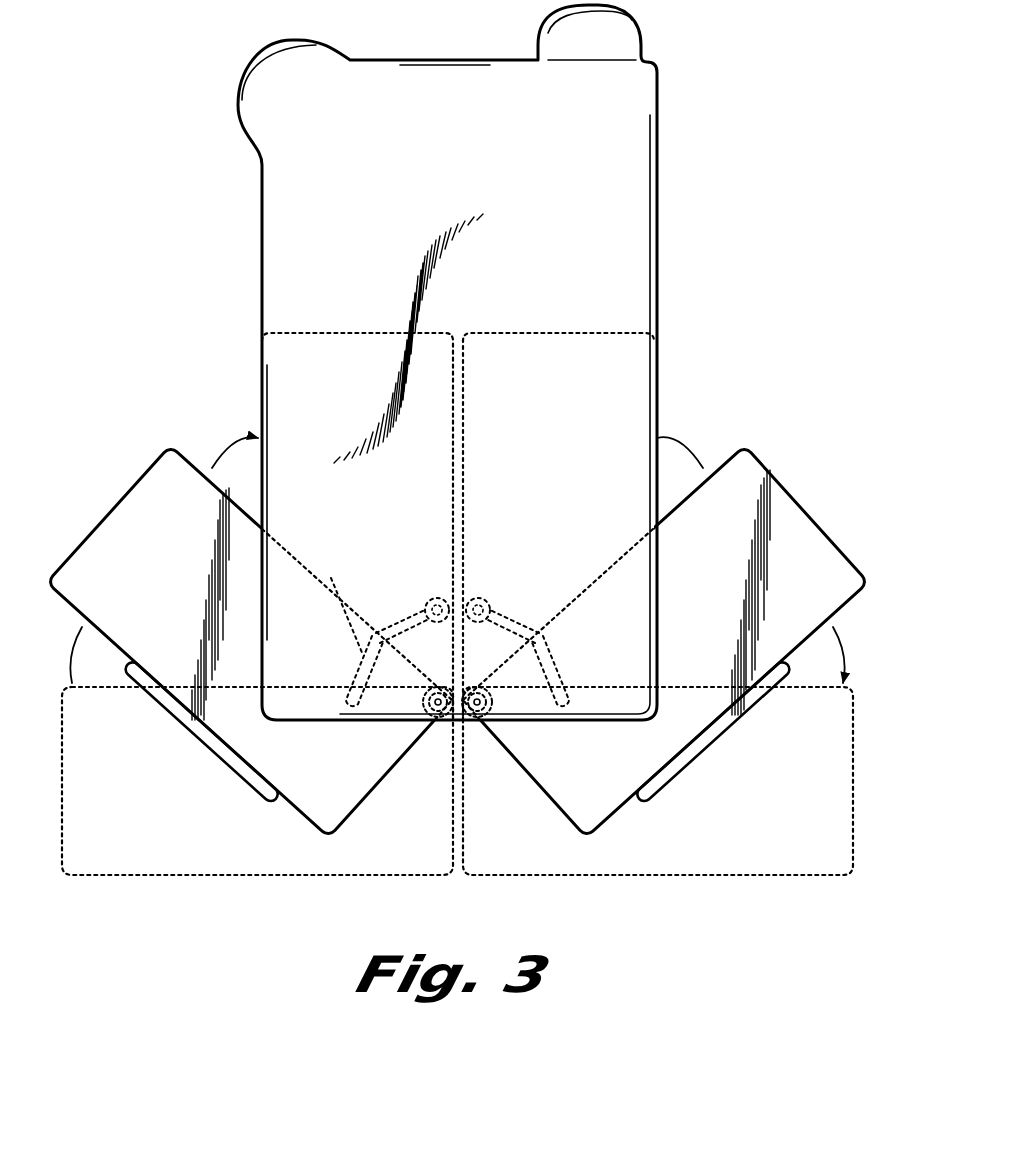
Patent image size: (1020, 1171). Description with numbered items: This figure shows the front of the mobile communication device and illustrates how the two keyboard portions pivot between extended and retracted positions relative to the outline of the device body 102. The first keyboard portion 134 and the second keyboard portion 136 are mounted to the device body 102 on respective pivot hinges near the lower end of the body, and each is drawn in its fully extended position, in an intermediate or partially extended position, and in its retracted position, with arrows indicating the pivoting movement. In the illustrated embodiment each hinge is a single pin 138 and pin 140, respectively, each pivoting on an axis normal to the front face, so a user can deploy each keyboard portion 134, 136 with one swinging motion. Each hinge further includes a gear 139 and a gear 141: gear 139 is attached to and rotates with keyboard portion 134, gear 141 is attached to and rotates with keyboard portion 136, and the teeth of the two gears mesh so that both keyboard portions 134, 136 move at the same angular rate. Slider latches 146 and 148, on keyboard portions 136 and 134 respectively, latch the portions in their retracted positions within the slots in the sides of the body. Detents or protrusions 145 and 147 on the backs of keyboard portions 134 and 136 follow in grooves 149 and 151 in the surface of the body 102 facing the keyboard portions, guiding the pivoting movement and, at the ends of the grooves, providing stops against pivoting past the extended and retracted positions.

The device body 102 is at (663, 112).
The first keyboard portion 134 is at (806, 500).
The second keyboard portion 136 is at (145, 473).
The pin 138 is at (476, 717).
The gear 139 is at (491, 695).
The pin 140 is at (441, 717).
The gear 141 is at (425, 694).
The detent or protrusion 145 is at (540, 634).
The slider latch 146 is at (163, 716).
The detent or protrusion 147 is at (379, 630).
The slider latch 148 is at (795, 675).
The groove 149 is at (556, 662).
The groove 151 is at (352, 655).